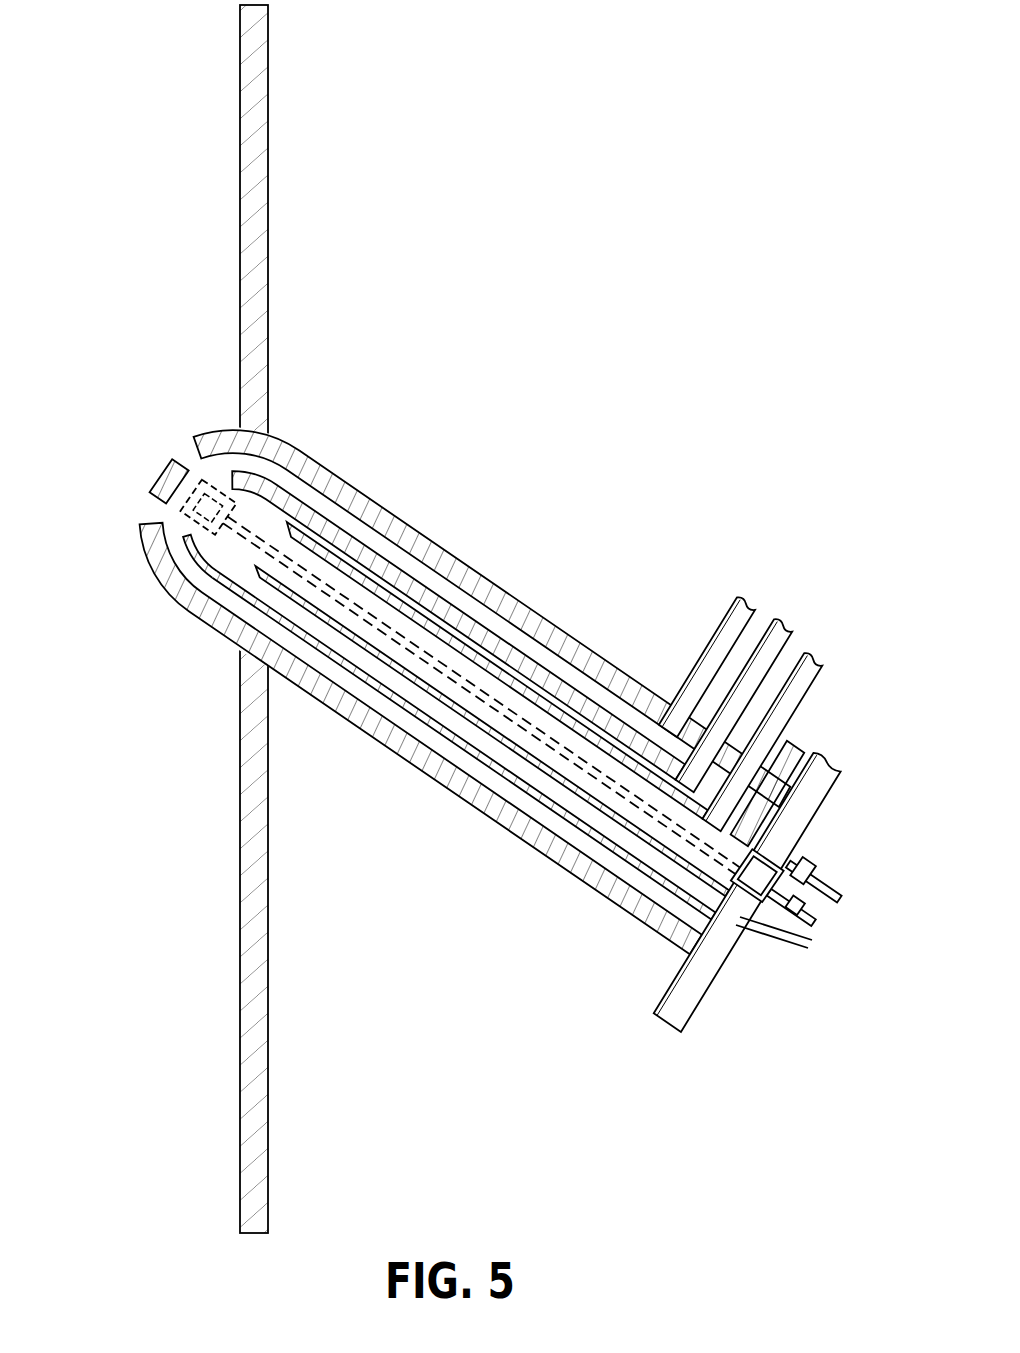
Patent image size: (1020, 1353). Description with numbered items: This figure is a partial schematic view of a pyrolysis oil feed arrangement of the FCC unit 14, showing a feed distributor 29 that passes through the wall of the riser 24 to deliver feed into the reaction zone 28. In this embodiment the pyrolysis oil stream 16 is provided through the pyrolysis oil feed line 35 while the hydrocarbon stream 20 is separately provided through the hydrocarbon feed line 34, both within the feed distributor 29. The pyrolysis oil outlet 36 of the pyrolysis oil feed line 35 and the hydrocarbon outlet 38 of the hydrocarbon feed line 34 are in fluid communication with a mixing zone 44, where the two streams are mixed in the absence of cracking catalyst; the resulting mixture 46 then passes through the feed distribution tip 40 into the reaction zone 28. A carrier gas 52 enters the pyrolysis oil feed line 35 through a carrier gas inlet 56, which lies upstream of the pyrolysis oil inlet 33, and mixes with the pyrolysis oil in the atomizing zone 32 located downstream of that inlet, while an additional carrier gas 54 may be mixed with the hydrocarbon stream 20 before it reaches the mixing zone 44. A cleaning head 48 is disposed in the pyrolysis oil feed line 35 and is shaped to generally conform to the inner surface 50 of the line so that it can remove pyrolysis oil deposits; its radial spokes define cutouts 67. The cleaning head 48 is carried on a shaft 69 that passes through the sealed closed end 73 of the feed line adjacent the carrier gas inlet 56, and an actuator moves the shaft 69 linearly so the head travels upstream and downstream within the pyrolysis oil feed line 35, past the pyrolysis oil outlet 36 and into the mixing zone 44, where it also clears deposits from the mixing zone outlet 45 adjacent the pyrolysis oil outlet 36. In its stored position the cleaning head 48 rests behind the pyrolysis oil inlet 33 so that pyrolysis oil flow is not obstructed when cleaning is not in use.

The FCC unit 14 is at (366, 227).
The pyrolysis oil stream 16 is at (770, 736).
The hydrocarbon stream 20 is at (746, 703).
The riser 24 is at (270, 884).
The reaction zone 28 is at (88, 398).
The feed distributor 29 is at (397, 484).
The atomizing zone 32 is at (720, 886).
The pyrolysis oil inlet 33 is at (672, 832).
The hydrocarbon feed line 34 is at (435, 620).
The pyrolysis oil feed line 35 is at (478, 668).
The pyrolysis oil outlet 36 is at (288, 541).
The hydrocarbon outlet 38 is at (246, 565).
The feed distribution tip 40 is at (150, 513).
The mixing zone 44 is at (268, 512).
The mixing zone outlet 45 is at (148, 470).
The mixture 46 is at (90, 245).
The cleaning head 48 is at (200, 492).
The inner surface 50 is at (383, 603).
The carrier gas 52 is at (779, 847).
The additional carrier gas 54 is at (720, 652).
The carrier gas inlet 56 is at (783, 864).
The cutouts 67 is at (787, 912).
The shaft 69 is at (800, 915).
The closed end 73 is at (800, 881).